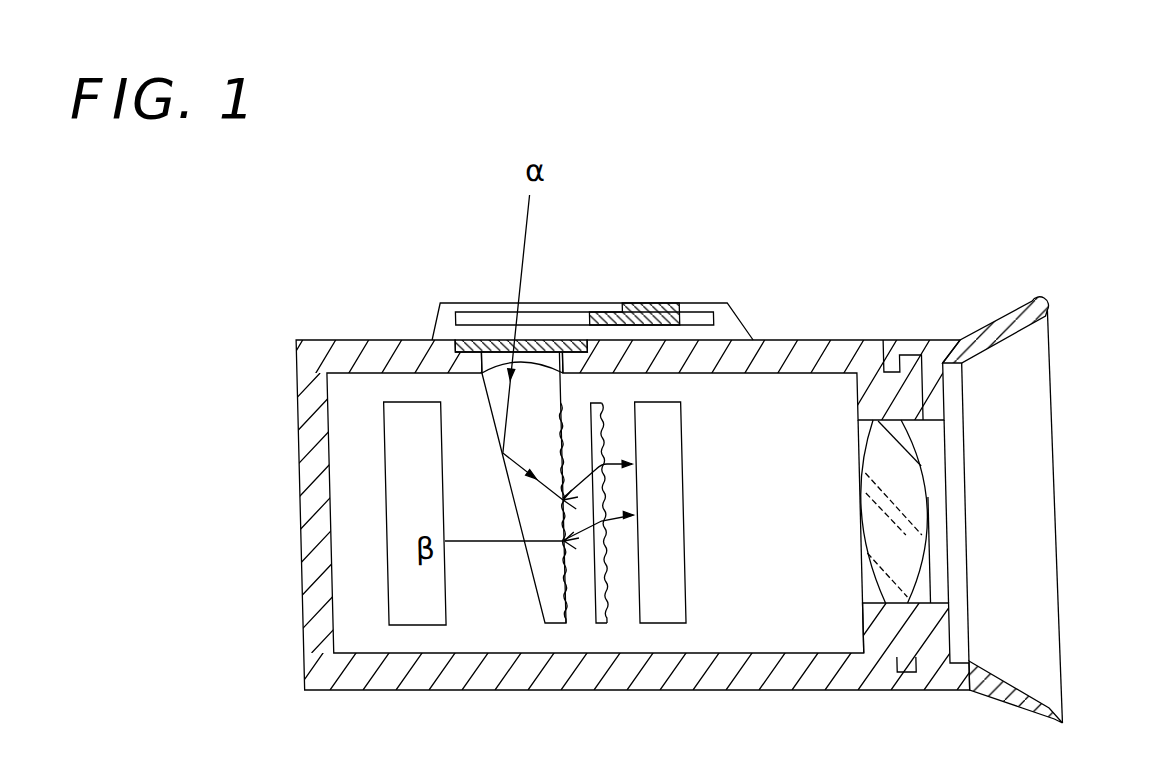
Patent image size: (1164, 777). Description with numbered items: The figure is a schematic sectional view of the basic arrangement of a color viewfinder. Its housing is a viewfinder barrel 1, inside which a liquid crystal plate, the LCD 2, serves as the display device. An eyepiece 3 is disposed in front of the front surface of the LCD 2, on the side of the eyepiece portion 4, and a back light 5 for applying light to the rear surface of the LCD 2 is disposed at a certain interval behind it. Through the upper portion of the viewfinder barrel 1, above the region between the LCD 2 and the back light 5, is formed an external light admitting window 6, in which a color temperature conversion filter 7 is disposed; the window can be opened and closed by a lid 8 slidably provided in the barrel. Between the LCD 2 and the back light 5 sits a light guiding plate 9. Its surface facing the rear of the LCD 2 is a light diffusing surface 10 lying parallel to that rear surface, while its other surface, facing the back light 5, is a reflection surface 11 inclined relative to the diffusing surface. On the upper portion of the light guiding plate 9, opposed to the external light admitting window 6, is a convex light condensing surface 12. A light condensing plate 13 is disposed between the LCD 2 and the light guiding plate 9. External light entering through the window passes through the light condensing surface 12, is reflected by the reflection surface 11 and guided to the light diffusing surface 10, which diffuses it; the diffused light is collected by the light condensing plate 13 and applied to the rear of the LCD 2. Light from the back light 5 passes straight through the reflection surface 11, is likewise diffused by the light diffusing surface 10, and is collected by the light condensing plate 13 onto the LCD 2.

The viewfinder barrel 1 is at (842, 340).
The liquid crystal plate (LCD) 2 is at (667, 438).
The eyepiece 3 is at (912, 493).
The eyepiece portion 4 is at (1005, 325).
The back light 5 is at (393, 488).
The external light admitting window 6 is at (490, 353).
The color temperature conversion filter 7 is at (557, 343).
The lid 8 is at (665, 303).
The light guiding plate 9 is at (543, 572).
The light diffusing surface 10 is at (566, 587).
The reflection surface 11 is at (486, 398).
The light condensing surface 12 is at (531, 350).
The light condensing plate 13 is at (615, 597).